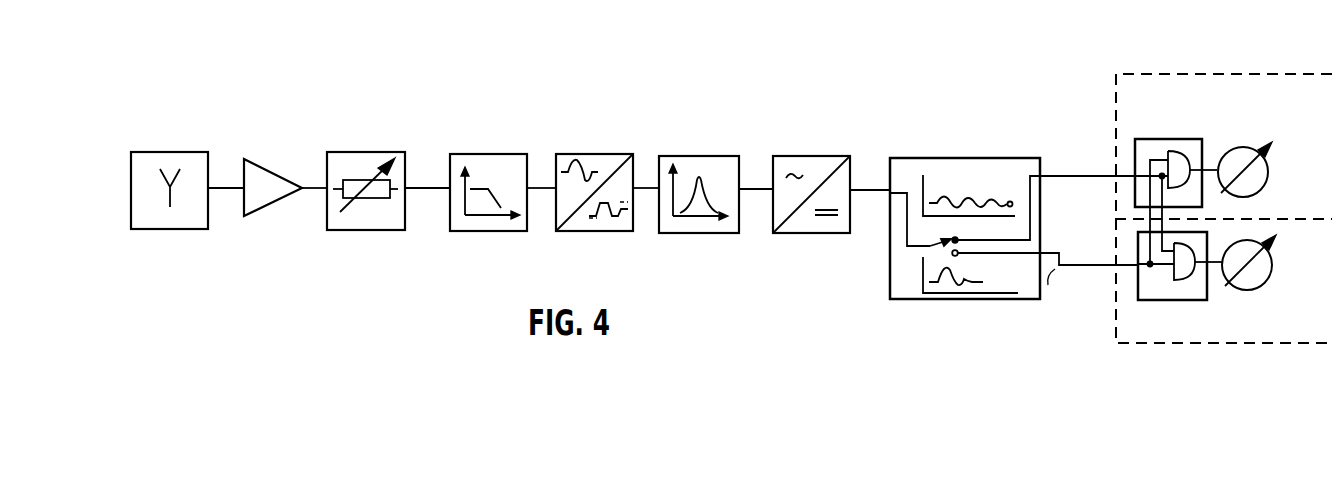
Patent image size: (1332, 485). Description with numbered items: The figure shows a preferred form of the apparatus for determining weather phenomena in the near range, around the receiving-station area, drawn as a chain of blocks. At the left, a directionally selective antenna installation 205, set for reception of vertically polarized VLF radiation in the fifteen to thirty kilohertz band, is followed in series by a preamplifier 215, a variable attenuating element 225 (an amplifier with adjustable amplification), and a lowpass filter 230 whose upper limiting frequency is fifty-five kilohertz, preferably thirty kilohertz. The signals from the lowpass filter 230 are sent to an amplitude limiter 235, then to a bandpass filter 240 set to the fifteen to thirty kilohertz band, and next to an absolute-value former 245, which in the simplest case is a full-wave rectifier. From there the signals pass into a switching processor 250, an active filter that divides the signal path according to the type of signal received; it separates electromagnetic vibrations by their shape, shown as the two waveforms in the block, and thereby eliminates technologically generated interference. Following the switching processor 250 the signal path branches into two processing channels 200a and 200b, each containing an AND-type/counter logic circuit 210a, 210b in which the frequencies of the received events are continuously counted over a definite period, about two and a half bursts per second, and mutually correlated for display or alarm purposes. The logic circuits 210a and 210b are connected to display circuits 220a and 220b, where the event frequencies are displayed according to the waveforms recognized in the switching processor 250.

The directionally selective antenna installation 205 is at (178, 152).
The preamplifier 215 is at (253, 167).
The variable attenuating element 225 is at (340, 160).
The lowpass filter 230 is at (458, 163).
The amplitude limiter 235 is at (565, 161).
The bandpass filter 240 is at (665, 161).
The absolute-value former 245 is at (780, 162).
The switching processor 250 is at (900, 167).
The first processing channel 200a is at (1138, 83).
The second processing channel 200b is at (1133, 333).
The AND-type/counter logic circuit 210a is at (1190, 148).
The AND-type/counter logic circuit 210b is at (1183, 290).
The display circuit 220a is at (1270, 180).
The display circuit 220b is at (1262, 290).